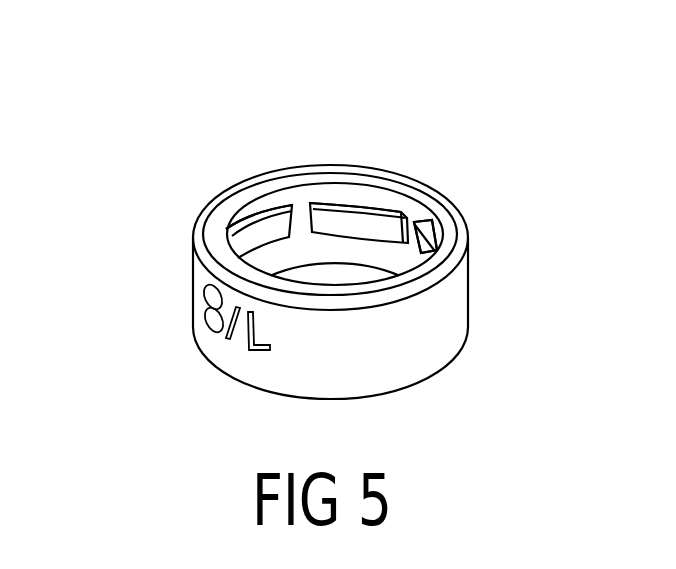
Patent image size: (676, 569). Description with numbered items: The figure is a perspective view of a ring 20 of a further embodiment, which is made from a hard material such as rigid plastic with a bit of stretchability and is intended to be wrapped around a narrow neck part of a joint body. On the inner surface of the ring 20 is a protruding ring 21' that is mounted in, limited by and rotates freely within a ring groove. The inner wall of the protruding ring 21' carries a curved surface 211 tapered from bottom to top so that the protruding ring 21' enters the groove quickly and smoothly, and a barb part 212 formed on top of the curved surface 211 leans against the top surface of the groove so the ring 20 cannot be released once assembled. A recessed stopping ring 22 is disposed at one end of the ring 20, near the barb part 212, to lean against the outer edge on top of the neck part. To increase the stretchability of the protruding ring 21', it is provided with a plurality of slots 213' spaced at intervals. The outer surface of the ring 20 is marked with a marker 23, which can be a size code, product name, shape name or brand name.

The ring 20 is at (407, 332).
The protruding ring 21' is at (248, 165).
The recessed stopping ring 22 is at (223, 250).
The marker 23 is at (211, 329).
The curved surface 211 is at (427, 247).
The barb part 212 is at (367, 203).
The slots 213' is at (358, 152).